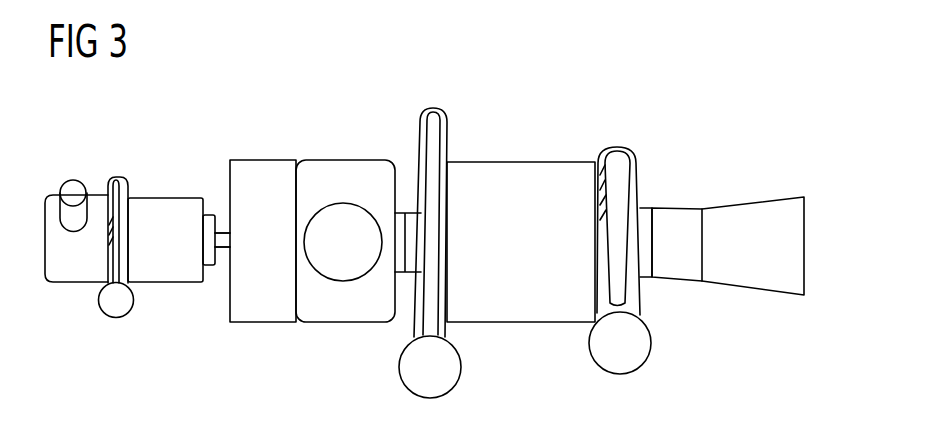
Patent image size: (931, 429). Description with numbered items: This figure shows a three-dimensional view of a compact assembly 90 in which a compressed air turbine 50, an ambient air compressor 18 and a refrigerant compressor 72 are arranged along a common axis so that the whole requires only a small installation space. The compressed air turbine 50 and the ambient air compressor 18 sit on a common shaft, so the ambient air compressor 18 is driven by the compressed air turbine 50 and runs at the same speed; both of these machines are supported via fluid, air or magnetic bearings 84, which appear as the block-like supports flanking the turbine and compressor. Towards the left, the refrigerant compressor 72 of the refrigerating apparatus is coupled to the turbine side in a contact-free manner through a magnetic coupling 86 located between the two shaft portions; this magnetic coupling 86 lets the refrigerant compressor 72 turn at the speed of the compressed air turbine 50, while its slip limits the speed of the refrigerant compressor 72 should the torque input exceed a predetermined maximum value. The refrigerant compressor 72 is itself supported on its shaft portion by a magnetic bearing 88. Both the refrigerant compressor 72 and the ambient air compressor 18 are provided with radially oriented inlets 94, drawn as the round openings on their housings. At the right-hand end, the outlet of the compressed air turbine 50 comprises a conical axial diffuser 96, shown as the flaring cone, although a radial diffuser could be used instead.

The assembly 90 is at (733, 97).
The radially oriented inlets 94 is at (70, 273).
The refrigerant compressor 72 is at (121, 177).
The magnetic bearing 88 is at (175, 275).
The magnetic coupling 86 is at (214, 178).
The bearings 84 is at (260, 310).
The ambient air compressor 18 is at (437, 120).
The compressed air turbine 50 is at (618, 150).
The conical axial diffuser 96 is at (743, 215).